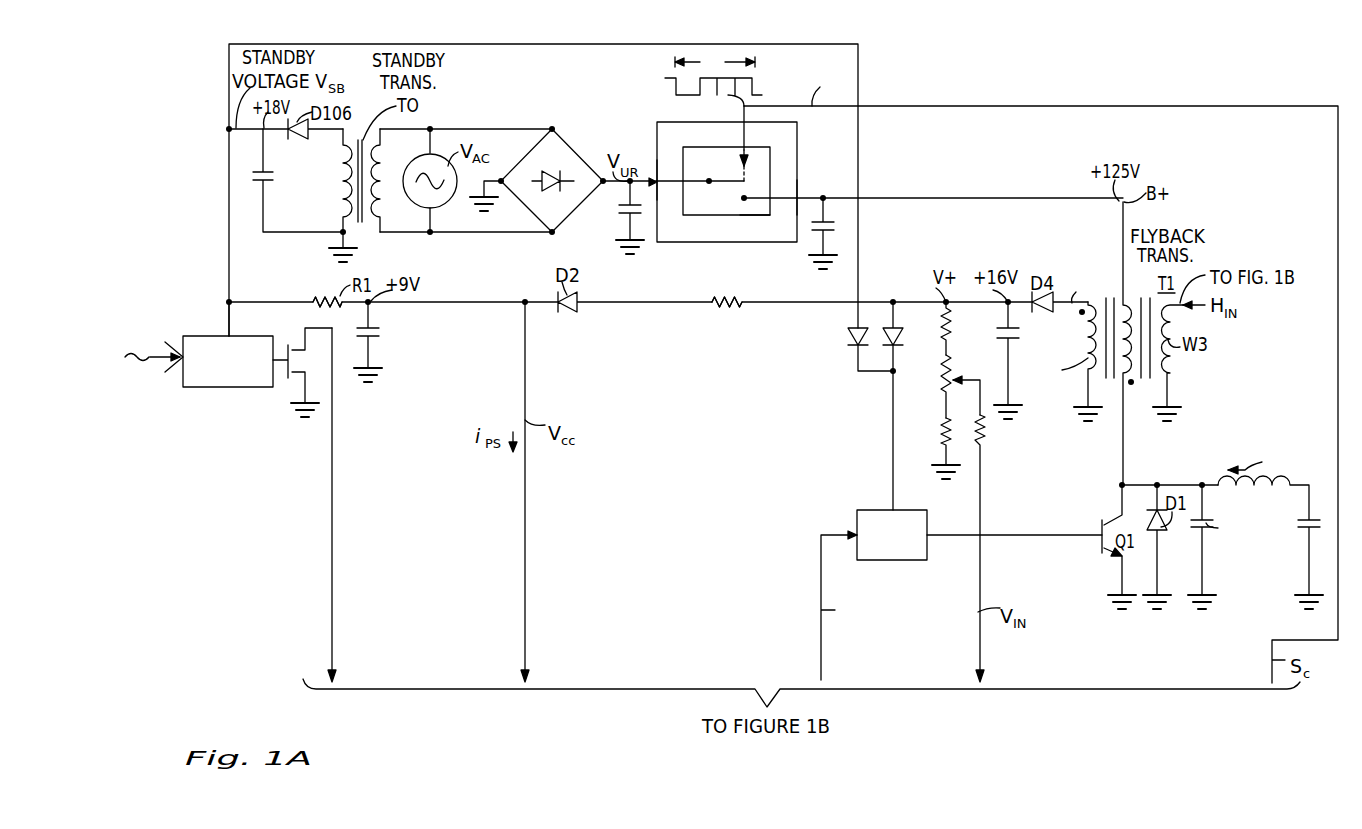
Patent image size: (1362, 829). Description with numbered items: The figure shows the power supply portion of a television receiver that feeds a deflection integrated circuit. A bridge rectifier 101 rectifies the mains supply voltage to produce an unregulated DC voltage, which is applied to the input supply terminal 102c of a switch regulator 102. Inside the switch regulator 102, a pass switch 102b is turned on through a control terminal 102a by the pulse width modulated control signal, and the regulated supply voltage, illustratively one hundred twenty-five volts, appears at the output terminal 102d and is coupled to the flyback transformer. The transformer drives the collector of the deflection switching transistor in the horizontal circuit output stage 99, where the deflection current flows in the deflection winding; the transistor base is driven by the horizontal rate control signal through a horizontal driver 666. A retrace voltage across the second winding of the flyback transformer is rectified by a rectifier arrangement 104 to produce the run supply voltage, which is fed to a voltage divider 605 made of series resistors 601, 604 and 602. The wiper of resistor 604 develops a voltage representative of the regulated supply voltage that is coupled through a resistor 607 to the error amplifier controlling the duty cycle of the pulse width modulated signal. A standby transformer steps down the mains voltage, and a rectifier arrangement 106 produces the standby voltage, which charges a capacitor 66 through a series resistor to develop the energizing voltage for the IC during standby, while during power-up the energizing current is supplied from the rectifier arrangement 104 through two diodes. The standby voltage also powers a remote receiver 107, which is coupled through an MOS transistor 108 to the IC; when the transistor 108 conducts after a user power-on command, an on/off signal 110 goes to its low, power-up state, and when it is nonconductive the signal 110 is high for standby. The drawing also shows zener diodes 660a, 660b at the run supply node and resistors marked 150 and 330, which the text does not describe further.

The remote receiver 107 is at (197, 336).
The MOS transistor 108 is at (289, 344).
The on/off signal 110 is at (332, 420).
The rectifier arrangement 106 is at (320, 187).
The bridge rectifier 101 is at (566, 166).
The switch regulator 102 is at (778, 122).
The control terminal 102a is at (744, 160).
The pass switch 102b is at (758, 216).
The input supply terminal 102c is at (657, 182).
The output terminal 102d is at (797, 198).
The rectifier arrangement 104 is at (1060, 398).
The horizontal circuit output stage 99 is at (1270, 576).
The resistor 601 is at (951, 320).
The resistor 602 is at (941, 430).
The resistor 604 is at (950, 366).
The voltage divider 605 is at (935, 408).
The resistor 607 is at (985, 430).
The zener diode 660a is at (857, 333).
The zener diode 660b is at (896, 320).
The horizontal driver 666 is at (875, 562).
The capacitor 66 is at (379, 335).
The resistor 150 is at (721, 290).
The resistor R1 330 is at (317, 290).